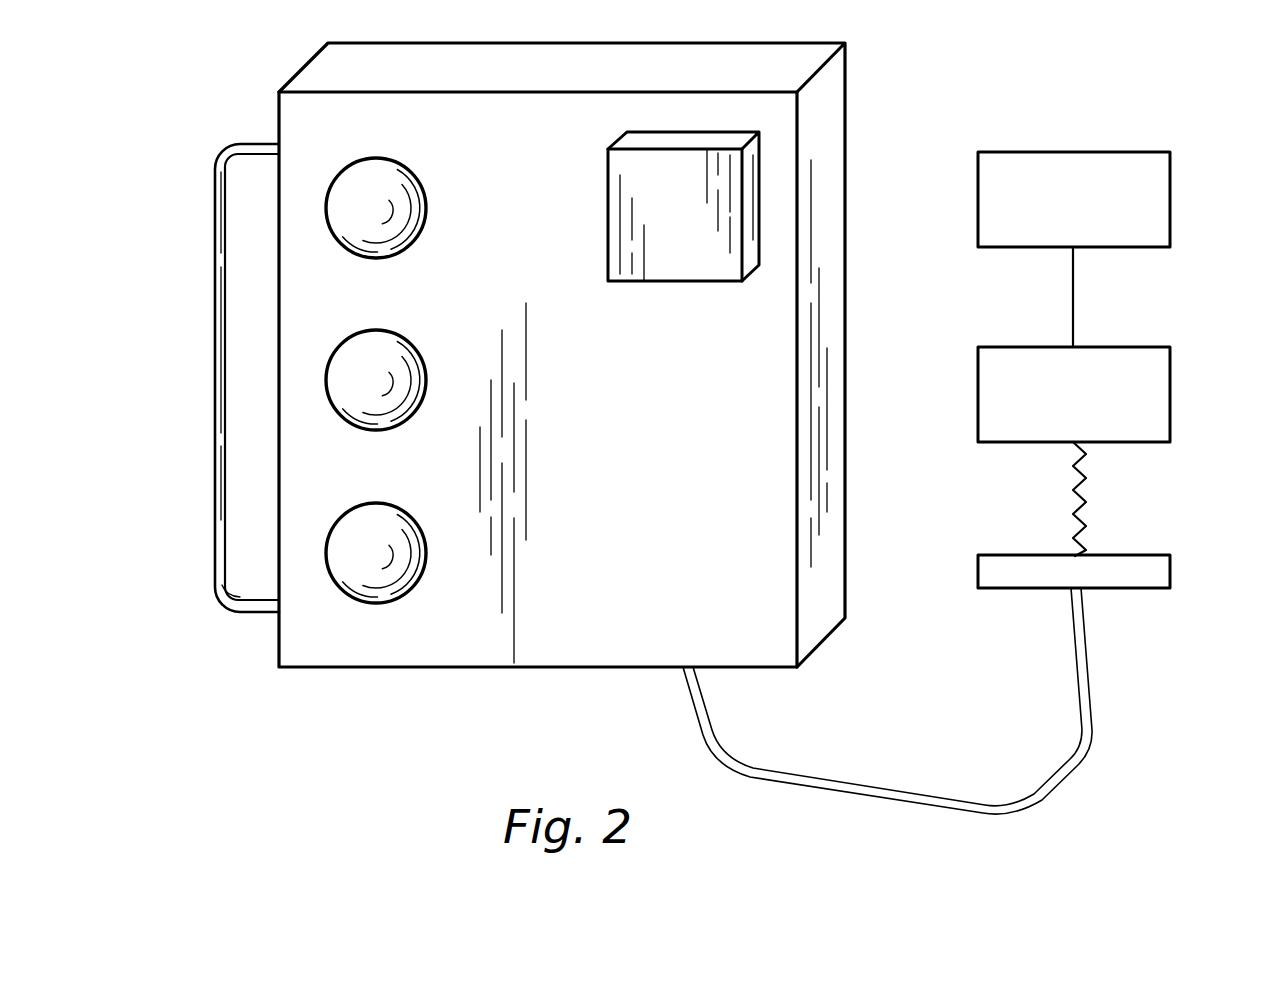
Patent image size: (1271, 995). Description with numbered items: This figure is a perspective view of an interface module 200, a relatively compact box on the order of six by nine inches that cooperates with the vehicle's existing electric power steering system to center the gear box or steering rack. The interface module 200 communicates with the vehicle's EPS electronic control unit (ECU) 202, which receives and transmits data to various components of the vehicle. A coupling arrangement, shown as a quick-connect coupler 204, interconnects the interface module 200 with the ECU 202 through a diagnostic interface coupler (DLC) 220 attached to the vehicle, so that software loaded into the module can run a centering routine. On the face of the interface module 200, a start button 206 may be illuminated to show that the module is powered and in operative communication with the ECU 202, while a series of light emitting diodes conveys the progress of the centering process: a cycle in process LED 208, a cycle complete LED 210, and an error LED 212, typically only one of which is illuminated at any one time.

The interface module 200 is at (322, 690).
The electronic control unit (ECU) 202 is at (1112, 152).
The quick-connect coupler 204 is at (1128, 555).
The start button 206 is at (688, 250).
The cycle in process LED 208 is at (372, 342).
The cycle complete LED 210 is at (372, 170).
The error LED 212 is at (372, 515).
The diagnostic interface coupler (DLC) 220 is at (1131, 347).